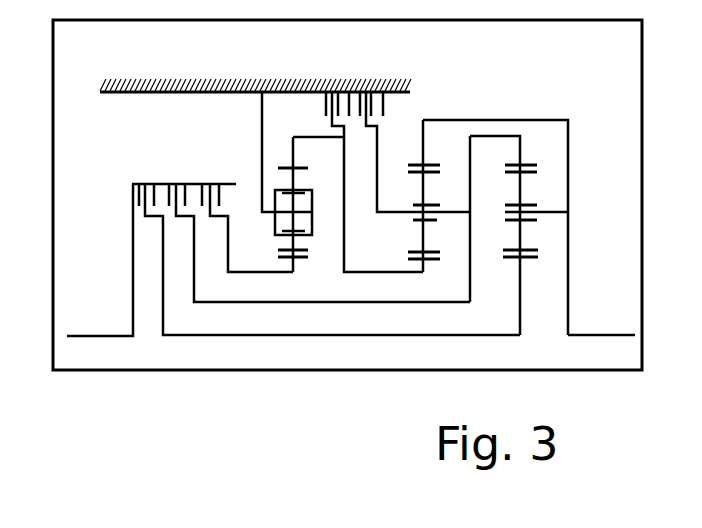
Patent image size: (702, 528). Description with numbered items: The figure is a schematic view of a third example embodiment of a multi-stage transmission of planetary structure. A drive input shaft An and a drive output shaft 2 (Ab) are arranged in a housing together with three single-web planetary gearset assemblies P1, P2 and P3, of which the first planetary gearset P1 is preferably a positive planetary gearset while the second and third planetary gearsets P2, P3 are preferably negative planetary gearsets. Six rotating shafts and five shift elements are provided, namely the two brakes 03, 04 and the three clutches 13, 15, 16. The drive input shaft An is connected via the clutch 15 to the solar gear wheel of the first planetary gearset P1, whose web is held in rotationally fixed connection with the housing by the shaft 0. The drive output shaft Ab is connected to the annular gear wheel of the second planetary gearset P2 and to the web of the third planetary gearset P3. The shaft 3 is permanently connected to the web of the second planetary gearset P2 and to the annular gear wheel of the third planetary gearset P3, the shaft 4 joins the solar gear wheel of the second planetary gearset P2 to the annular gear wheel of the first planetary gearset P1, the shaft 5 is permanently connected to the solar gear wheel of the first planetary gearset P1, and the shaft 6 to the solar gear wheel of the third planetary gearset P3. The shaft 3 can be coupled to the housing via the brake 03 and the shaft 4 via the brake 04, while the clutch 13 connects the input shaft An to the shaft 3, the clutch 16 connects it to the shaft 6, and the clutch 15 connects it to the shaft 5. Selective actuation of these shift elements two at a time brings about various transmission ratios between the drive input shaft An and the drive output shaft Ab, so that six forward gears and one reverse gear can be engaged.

The drive input shaft An is at (100, 260).
The drive output shaft Ab is at (601, 322).
The clutch 16 is at (326, 250).
The clutch 13 is at (319, 234).
The clutch 15 is at (247, 219).
The brake 04 is at (361, 182).
The brake 03 is at (415, 152).
The first single-web planetary gearset P1 is at (305, 186).
The second planetary gearset P2 is at (436, 148).
The third planetary gearset P3 is at (515, 132).
The shaft 4 is at (359, 215).
The shaft 0 is at (298, 212).
The shaft 5 is at (293, 265).
The drive output shaft 2 is at (475, 184).
The shaft 3 is at (475, 184).
The shaft 6 is at (520, 263).